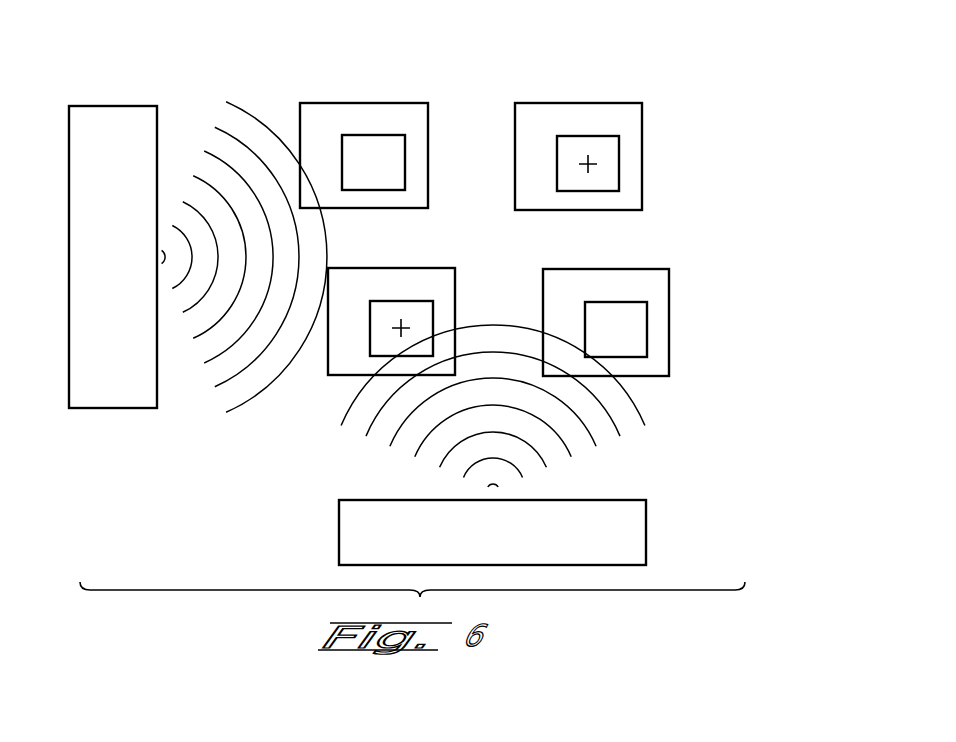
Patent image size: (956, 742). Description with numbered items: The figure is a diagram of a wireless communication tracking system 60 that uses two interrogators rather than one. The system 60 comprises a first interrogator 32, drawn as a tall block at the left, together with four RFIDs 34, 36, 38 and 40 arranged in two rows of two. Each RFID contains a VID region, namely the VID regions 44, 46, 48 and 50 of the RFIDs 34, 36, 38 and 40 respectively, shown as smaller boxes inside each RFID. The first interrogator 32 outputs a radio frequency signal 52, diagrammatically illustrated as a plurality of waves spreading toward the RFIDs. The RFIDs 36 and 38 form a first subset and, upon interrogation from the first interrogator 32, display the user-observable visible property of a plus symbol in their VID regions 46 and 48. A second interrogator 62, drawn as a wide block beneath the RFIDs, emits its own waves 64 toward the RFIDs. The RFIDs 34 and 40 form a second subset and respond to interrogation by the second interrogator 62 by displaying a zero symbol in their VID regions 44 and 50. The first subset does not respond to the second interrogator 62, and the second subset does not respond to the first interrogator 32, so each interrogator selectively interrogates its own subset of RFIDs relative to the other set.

The interrogator 32 is at (95, 374).
The RFID 34 is at (385, 210).
The RFID 36 is at (585, 210).
The RFID 38 is at (458, 292).
The RFID 40 is at (652, 377).
The VID region 44 is at (373, 135).
The VID region 46 is at (600, 136).
The VID region 48 is at (395, 301).
The VID region 50 is at (648, 318).
The radio frequency signal 52 is at (190, 352).
The tracking system 60 is at (441, 314).
The second interrogator 62 is at (474, 549).
The signal waves from second transceiver 64 is at (587, 437).